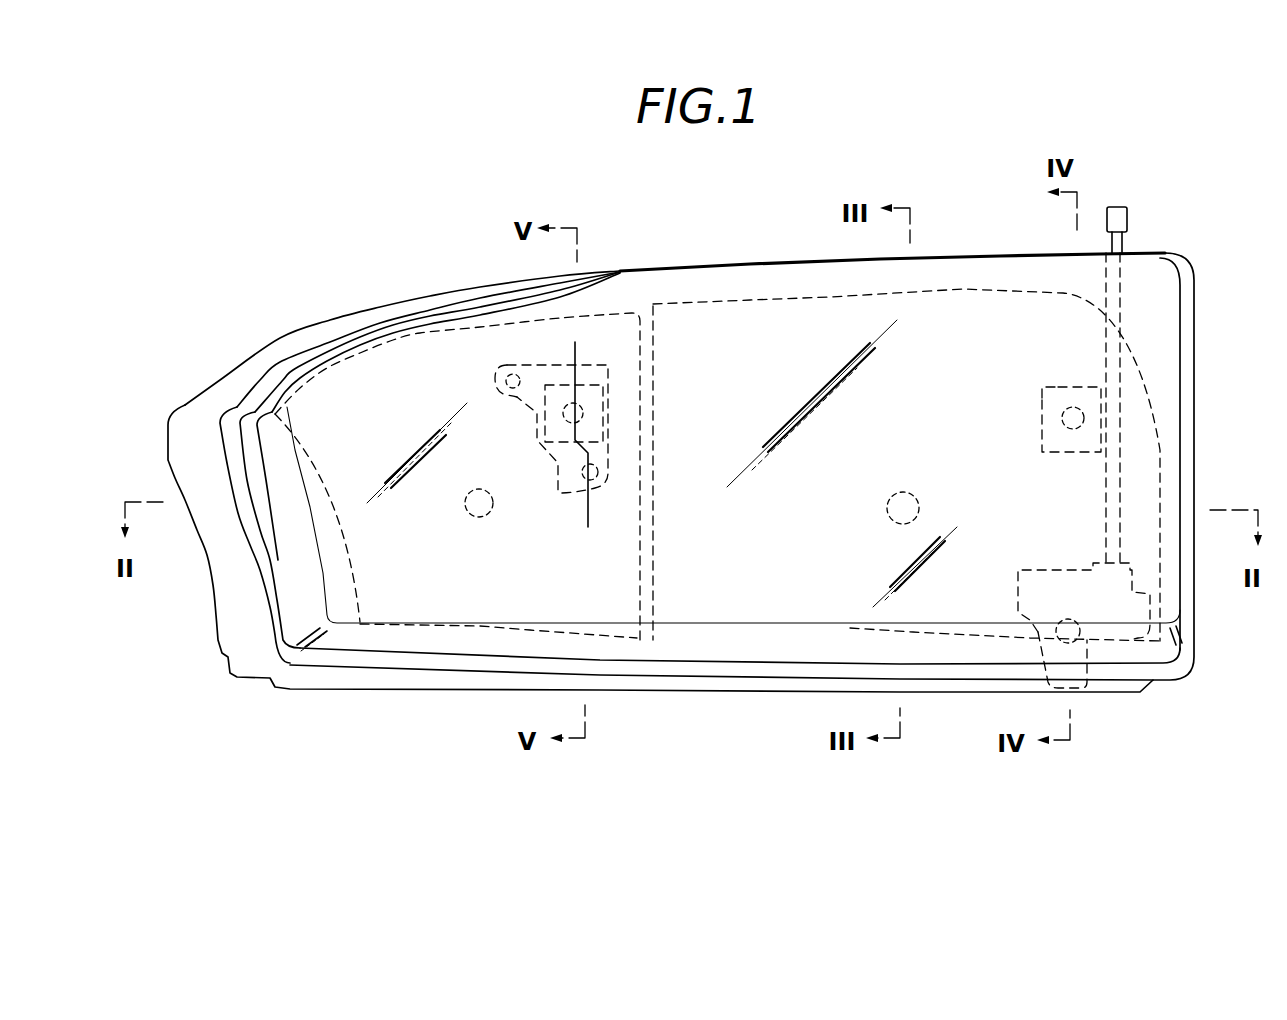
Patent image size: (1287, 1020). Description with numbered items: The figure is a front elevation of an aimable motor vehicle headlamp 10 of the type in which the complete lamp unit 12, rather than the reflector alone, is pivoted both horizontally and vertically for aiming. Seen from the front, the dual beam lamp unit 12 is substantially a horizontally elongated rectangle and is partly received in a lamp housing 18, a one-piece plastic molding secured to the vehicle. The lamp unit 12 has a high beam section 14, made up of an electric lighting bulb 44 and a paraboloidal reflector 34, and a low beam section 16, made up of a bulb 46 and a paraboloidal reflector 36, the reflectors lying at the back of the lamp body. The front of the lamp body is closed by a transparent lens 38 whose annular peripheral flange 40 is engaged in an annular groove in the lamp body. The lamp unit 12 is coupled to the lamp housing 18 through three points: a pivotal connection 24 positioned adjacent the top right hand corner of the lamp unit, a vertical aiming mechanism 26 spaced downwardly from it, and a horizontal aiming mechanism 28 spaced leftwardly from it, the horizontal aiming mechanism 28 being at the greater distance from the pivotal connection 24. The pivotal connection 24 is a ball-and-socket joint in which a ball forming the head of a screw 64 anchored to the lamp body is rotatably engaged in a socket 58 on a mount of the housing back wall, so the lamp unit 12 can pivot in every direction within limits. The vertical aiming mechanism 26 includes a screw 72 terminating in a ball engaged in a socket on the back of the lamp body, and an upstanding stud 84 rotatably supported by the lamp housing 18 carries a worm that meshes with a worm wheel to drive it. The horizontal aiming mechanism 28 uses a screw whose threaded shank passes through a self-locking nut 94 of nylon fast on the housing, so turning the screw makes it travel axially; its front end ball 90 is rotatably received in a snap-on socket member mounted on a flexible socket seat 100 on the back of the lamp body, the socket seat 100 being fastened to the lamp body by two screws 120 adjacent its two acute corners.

The aimable headlamp 10 is at (293, 297).
The lamp unit 12 is at (214, 420).
The high beam section 14 is at (430, 391).
The low beam section 16 is at (949, 330).
The lamp housing 18 is at (292, 335).
The pivotal connection 24 is at (1042, 407).
The vertical aiming mechanism 26 is at (1053, 569).
The horizontal aiming mechanism 28 is at (519, 408).
The paraboloidal reflector 34 is at (590, 313).
The paraboloidal reflector 36 is at (940, 297).
The lens 38 is at (453, 613).
The annular peripheral flange 40 is at (395, 640).
The electric lighting bulb 44 is at (474, 520).
The electric lighting bulb 46 is at (899, 490).
The socket 58 is at (1045, 383).
The screw 64 is at (1073, 405).
The screw 72 is at (1045, 622).
The upstanding stud 84 is at (1127, 240).
The ball 90 is at (585, 406).
The self-locking nut 94 is at (562, 434).
The flexible socket seat 100 is at (591, 366).
The screws 120 is at (519, 370).